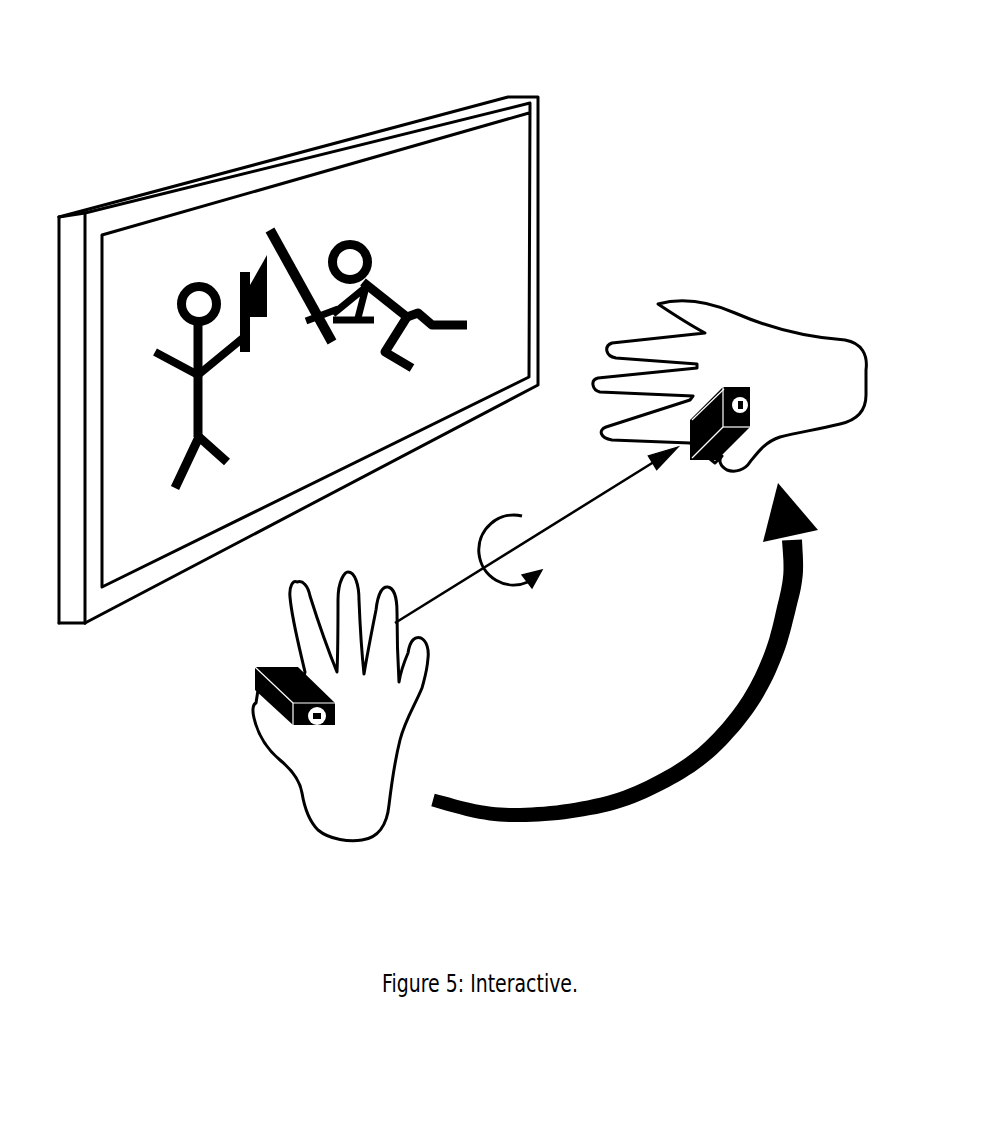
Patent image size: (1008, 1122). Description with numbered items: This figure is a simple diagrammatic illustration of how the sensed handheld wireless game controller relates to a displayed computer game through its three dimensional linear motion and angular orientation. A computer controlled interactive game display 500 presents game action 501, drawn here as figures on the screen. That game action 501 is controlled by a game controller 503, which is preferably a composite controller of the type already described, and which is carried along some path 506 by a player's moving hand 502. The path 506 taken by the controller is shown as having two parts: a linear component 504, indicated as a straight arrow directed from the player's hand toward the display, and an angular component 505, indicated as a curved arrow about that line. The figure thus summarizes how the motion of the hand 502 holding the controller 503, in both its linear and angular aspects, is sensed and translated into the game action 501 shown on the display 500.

The computer controlled interactive game display 500 is at (564, 108).
The game action 501 is at (414, 273).
The player's moving hand 502 is at (822, 318).
The game controller 503 is at (233, 684).
The linear component 504 is at (591, 530).
The angular component 505 is at (455, 544).
The path 506 is at (716, 775).